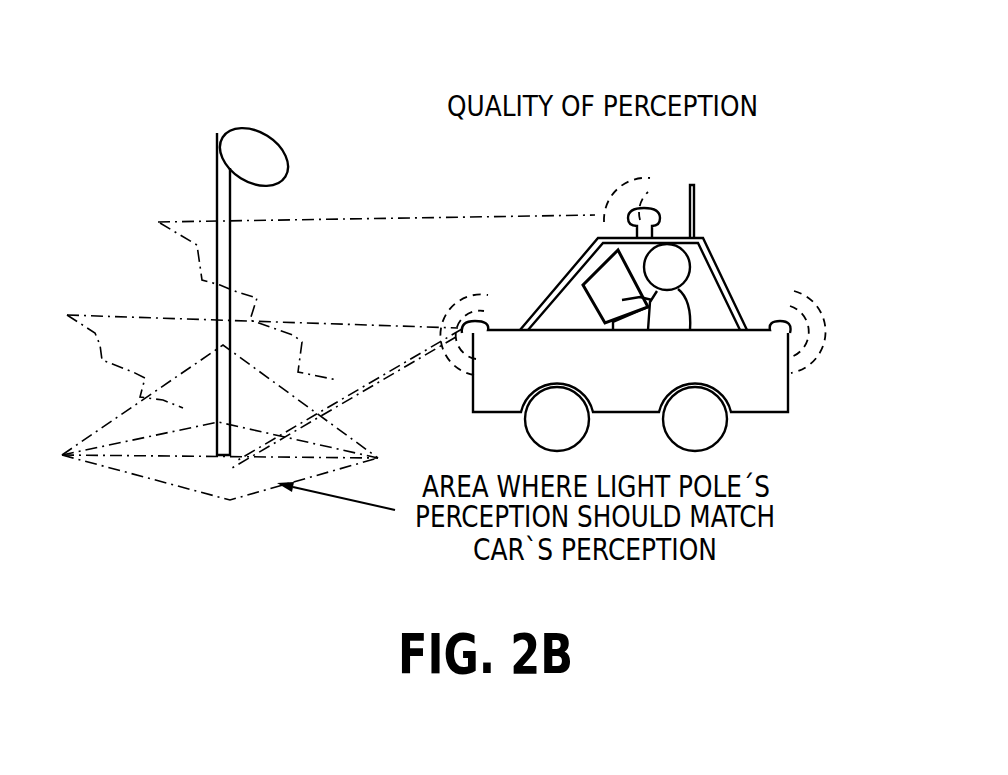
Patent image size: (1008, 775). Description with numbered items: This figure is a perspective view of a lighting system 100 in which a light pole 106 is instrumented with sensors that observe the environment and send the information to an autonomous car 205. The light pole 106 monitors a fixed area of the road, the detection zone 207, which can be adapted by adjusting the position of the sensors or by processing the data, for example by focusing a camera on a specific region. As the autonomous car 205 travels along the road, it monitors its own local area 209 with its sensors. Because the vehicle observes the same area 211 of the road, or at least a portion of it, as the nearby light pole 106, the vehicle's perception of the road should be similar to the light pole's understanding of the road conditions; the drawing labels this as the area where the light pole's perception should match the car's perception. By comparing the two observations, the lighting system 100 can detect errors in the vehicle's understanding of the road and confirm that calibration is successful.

The lighting system 100 is at (309, 94).
The light pole 106 is at (216, 135).
The autonomous car 205 is at (790, 393).
The detection zone 207 is at (110, 421).
The local area 209 is at (110, 345).
The same area 211 is at (152, 480).